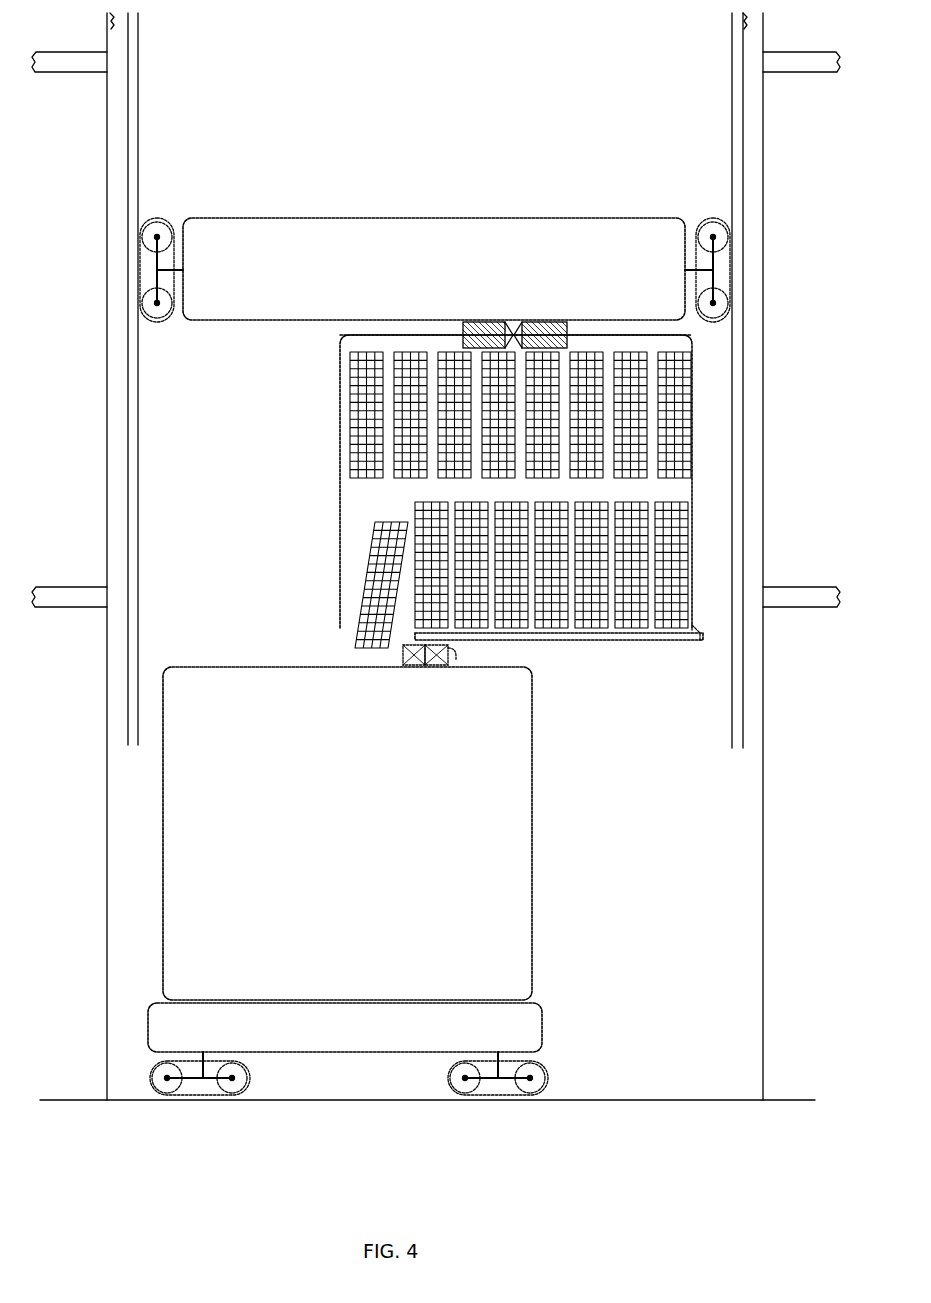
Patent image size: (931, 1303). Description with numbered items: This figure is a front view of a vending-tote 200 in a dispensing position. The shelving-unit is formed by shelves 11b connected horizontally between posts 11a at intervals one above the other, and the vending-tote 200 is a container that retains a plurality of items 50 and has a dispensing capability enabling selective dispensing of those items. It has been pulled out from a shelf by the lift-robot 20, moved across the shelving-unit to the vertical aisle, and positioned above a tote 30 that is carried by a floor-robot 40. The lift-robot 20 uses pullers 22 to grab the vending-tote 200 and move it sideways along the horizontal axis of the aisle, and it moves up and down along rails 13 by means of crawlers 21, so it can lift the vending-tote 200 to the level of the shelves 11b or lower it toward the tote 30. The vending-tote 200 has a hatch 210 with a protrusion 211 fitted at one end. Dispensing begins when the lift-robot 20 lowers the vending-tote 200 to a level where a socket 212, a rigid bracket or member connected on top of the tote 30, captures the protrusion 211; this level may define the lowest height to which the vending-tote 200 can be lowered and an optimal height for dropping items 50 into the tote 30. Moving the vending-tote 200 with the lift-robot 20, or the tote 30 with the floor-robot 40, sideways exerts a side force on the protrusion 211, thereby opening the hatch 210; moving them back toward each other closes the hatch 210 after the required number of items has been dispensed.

The post 11a is at (93, 75).
The shelf 11b is at (107, 357).
The rail 13 is at (138, 170).
The lift-robot 20 is at (370, 218).
The crawler 21 is at (160, 218).
The puller 22 is at (472, 320).
The vending-tote 200 is at (340, 405).
The hatch 210 is at (665, 640).
The protrusion 211 is at (450, 660).
The socket 212 is at (420, 668).
The tote 30 is at (532, 750).
The floor-robot 40 is at (542, 1020).
The item 50 is at (372, 540).